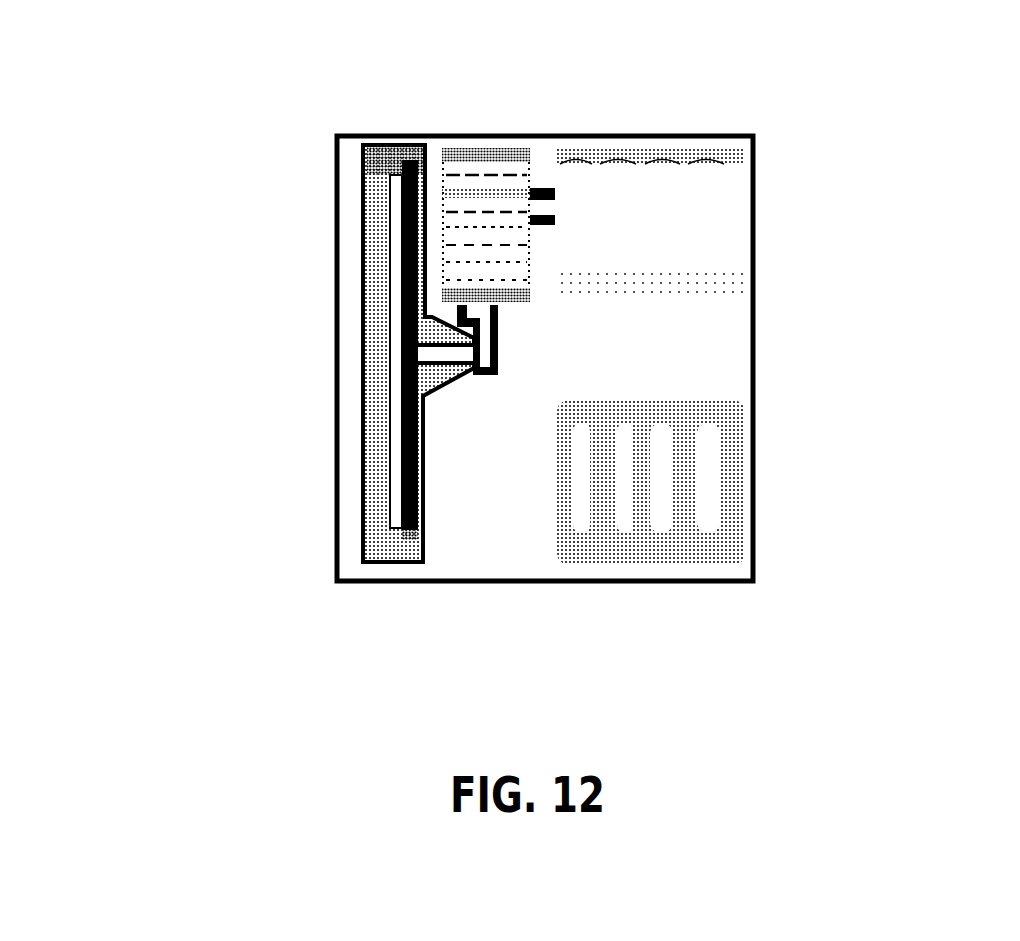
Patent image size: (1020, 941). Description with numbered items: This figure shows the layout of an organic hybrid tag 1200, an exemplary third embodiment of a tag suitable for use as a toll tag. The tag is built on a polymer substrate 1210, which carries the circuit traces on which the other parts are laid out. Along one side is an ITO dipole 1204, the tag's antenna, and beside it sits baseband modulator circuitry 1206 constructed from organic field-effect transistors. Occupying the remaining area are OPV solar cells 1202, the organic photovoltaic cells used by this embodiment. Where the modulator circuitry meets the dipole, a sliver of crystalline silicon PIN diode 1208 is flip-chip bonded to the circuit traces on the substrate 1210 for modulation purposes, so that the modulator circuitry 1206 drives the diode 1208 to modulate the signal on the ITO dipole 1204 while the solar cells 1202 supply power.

The RFID tag 1200 is at (460, 411).
The OPV solar cells 1202 is at (725, 356).
The ITO dipole 1204 is at (374, 231).
The baseband modulator circuitry 1206 is at (487, 163).
The crystalline silicon PIN diode 1208 is at (480, 385).
The polymer substrate 1210 is at (328, 366).